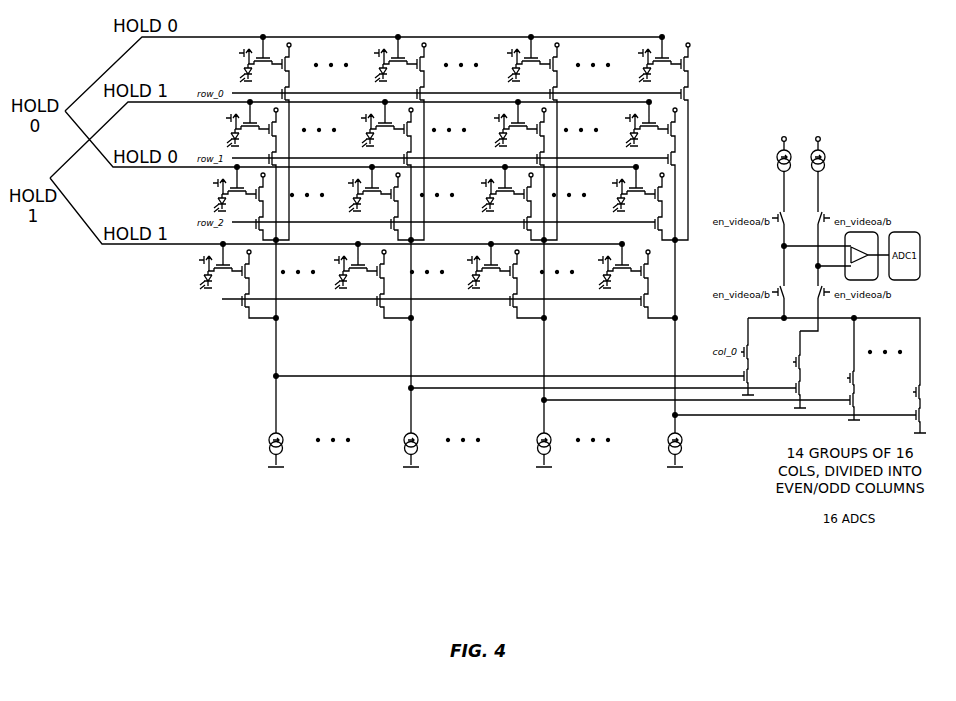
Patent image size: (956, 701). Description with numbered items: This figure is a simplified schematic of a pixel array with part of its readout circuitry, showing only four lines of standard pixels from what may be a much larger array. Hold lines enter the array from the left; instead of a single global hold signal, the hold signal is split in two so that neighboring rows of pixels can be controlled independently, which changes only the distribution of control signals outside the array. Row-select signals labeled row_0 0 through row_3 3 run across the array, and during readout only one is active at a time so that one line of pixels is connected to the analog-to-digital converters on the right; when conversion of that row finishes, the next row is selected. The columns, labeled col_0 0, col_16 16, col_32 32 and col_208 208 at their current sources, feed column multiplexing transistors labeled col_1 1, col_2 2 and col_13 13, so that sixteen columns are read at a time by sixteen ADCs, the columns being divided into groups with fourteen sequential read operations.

The column 0 pixel column, readout bus and current source 0 is at (245, 251).
The column 16 pixel column, readout bus and current source 16 is at (380, 251).
The column 32 pixel column, readout bus and current source 32 is at (513, 251).
The column 208 pixel column, readout bus and current source 208 is at (644, 251).
The column 1 multiplexer select transistors 1 is at (785, 369).
The column 2 multiplexer select transistors 2 is at (839, 369).
The column 13 multiplexer select transistors 13 is at (902, 407).
The row 3 select line 3 is at (413, 300).